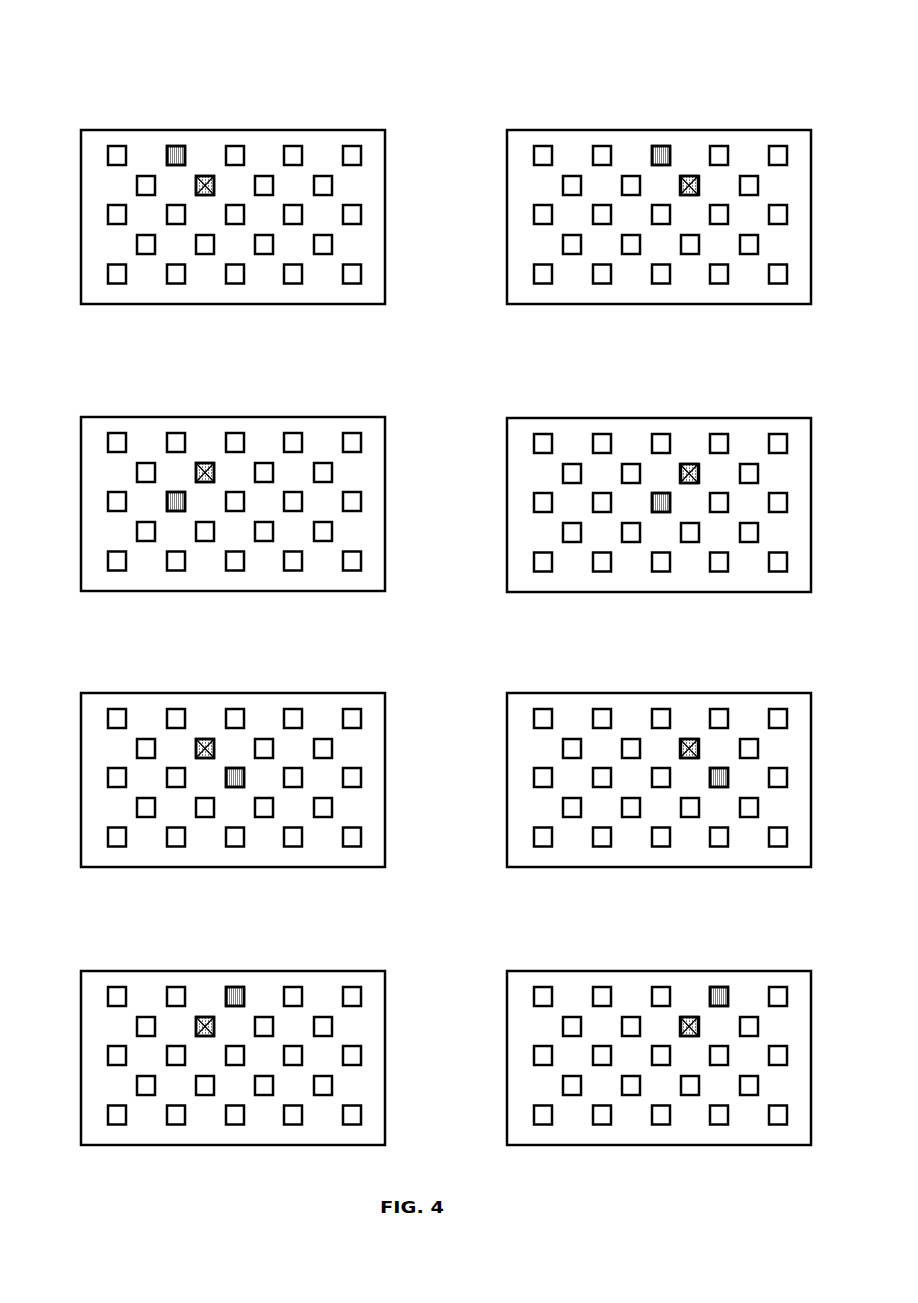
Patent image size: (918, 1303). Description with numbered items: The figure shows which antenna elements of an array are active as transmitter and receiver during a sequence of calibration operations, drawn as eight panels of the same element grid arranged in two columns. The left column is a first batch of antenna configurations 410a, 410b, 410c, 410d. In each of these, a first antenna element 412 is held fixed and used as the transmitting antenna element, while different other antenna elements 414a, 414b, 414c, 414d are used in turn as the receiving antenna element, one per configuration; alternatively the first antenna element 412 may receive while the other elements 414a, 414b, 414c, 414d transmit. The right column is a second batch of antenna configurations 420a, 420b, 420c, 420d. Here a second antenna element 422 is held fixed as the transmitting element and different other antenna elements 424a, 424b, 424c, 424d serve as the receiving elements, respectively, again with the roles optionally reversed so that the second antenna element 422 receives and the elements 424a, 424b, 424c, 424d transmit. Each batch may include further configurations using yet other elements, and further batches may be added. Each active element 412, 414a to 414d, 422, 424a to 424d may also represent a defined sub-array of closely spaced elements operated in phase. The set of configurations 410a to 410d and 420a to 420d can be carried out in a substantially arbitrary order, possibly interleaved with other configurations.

The antenna configuration 410a is at (98, 130).
The antenna configuration 410b is at (98, 417).
The antenna configuration 410c is at (98, 693).
The antenna configuration 410d is at (98, 971).
The first antenna element 412 is at (207, 180).
The other antenna element 414a is at (177, 147).
The other antenna element 414b is at (175, 492).
The other antenna element 414c is at (232, 770).
The other antenna element 414d is at (230, 990).
The antenna configuration 420a is at (524, 130).
The antenna configuration 420b is at (524, 418).
The antenna configuration 420c is at (524, 693).
The antenna configuration 420d is at (524, 971).
The second antenna element 422 is at (689, 183).
The other antenna element 424a is at (658, 153).
The other antenna element 424b is at (660, 492).
The other antenna element 424c is at (710, 772).
The other antenna element 424d is at (712, 995).